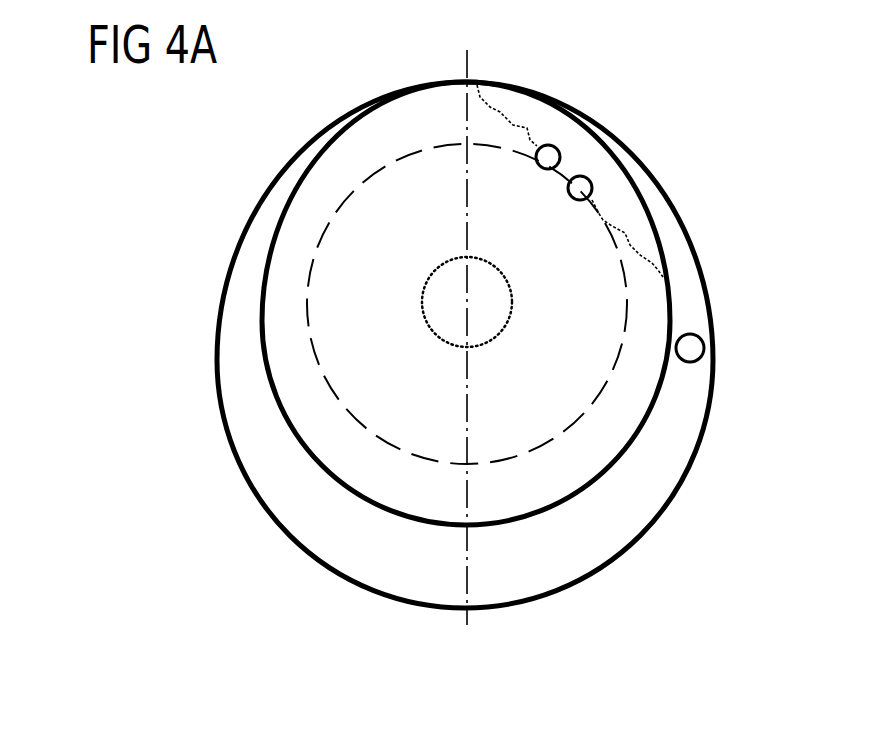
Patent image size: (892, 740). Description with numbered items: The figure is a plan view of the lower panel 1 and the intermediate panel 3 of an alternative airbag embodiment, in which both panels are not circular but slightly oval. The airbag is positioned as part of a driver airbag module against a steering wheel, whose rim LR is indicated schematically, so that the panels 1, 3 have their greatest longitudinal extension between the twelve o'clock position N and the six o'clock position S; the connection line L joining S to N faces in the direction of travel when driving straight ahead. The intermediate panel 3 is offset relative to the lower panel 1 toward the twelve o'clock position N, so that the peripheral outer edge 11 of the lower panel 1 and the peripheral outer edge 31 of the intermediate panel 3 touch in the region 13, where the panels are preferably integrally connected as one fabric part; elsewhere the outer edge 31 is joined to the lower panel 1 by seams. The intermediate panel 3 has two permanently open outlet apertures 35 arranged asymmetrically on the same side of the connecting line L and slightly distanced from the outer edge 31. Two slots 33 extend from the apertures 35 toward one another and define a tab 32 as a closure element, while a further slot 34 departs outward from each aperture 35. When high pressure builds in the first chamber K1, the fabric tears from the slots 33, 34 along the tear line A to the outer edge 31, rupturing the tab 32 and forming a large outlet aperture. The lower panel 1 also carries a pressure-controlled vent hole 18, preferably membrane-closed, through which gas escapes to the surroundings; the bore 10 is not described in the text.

The lower panel 1 is at (482, 373).
The intermediate panel 3 is at (576, 499).
The shaft / bore 10 is at (442, 320).
The peripheral outer edge of the lower panel 11 is at (580, 586).
The region of the 12 o'clock position 13 is at (473, 82).
The pressure-controlled vent hole 18 is at (690, 348).
The peripheral outer edge of the intermediate panel 31 is at (442, 527).
The tab 32 is at (586, 178).
The slots 33 is at (563, 169).
The slot 34 is at (548, 157).
The permanently open outlet apertures 35 is at (563, 170).
The tear line A is at (611, 157).
The first chamber K1 is at (564, 380).
The connection line L is at (467, 297).
The steering wheel rim LR is at (336, 212).
The 12 o'clock position N is at (480, 40).
The 6 o'clock position S is at (481, 672).